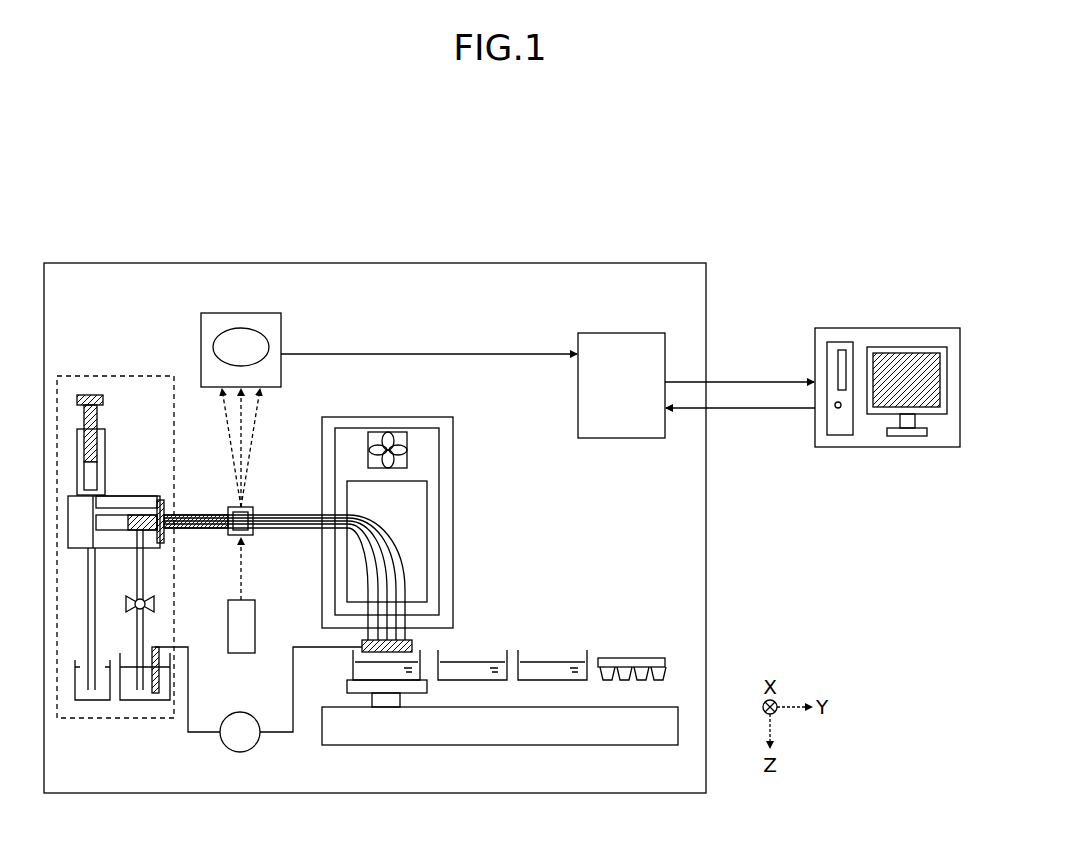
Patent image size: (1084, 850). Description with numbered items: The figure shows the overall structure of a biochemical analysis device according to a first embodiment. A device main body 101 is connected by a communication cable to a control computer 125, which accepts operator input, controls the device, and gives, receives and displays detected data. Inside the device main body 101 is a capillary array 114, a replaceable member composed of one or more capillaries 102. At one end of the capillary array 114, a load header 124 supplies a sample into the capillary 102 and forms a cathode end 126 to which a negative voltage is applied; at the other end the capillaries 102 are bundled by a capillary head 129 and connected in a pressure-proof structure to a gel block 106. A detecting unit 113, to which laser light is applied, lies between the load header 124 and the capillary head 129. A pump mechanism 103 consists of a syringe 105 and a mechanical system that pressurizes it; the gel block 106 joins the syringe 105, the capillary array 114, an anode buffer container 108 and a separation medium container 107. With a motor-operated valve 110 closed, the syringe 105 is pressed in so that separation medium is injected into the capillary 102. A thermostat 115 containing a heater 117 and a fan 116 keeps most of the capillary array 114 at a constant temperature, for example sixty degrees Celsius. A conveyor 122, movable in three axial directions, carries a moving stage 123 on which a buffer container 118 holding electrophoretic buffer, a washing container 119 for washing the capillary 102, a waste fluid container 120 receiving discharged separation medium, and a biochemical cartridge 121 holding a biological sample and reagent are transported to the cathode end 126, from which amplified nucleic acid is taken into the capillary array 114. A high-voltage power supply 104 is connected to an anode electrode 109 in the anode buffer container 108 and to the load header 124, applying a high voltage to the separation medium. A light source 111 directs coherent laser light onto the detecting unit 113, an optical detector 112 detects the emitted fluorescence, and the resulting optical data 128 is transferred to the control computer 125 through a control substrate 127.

The device main body 101 is at (370, 262).
The capillary 102 is at (302, 515).
The pump mechanism 103 is at (118, 383).
The high-voltage power supply 104 is at (257, 747).
The syringe 105 is at (107, 457).
The gel block 106 is at (115, 500).
The separation medium container 107 is at (103, 692).
The anode buffer container 108 is at (142, 700).
The anode electrode 109 is at (160, 695).
The motor-operated valve 110 is at (155, 602).
The light source 111 is at (255, 635).
The optical detector 112 is at (241, 313).
The detecting unit 113 is at (252, 507).
The capillary array 114 is at (378, 547).
The thermostat 115 is at (385, 417).
The fan 116 is at (402, 437).
The heater 117 is at (417, 498).
The buffer container 118 is at (420, 660).
The washing container 119 is at (460, 662).
The waste fluid container 120 is at (538, 662).
The biochemical cartridge 121 is at (627, 658).
The conveyor 122 is at (485, 737).
The moving stage 123 is at (387, 698).
The load header 124 is at (410, 641).
The control computer 125 is at (885, 328).
The cathode end 126 is at (372, 690).
The control substrate 127 is at (623, 432).
The optical data 128 is at (420, 353).
The capillary head 129 is at (165, 507).